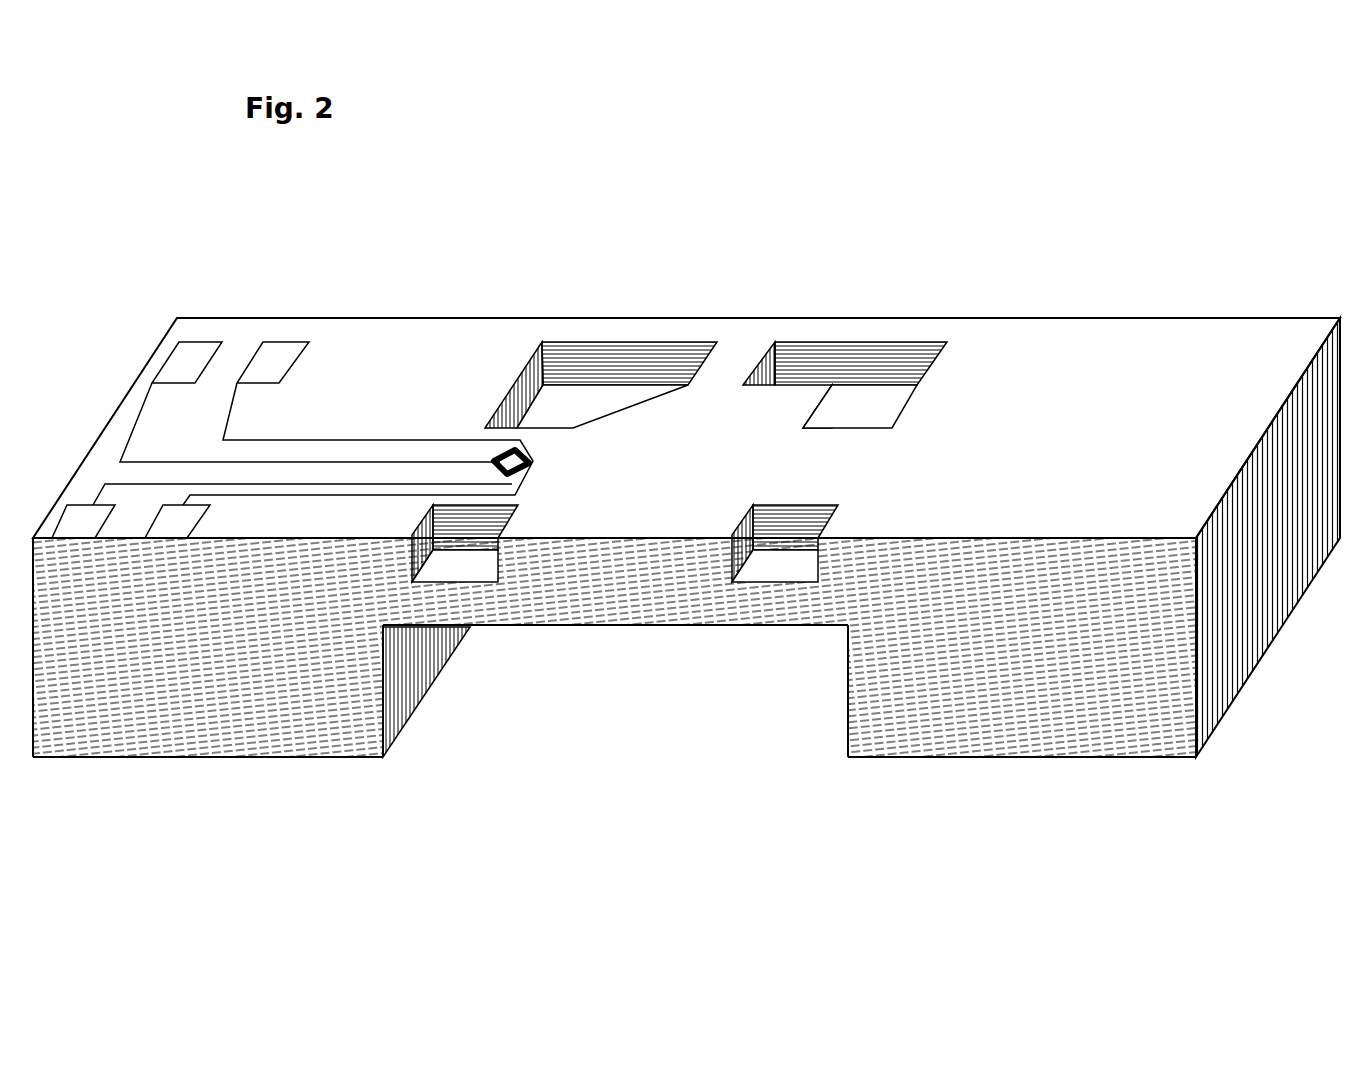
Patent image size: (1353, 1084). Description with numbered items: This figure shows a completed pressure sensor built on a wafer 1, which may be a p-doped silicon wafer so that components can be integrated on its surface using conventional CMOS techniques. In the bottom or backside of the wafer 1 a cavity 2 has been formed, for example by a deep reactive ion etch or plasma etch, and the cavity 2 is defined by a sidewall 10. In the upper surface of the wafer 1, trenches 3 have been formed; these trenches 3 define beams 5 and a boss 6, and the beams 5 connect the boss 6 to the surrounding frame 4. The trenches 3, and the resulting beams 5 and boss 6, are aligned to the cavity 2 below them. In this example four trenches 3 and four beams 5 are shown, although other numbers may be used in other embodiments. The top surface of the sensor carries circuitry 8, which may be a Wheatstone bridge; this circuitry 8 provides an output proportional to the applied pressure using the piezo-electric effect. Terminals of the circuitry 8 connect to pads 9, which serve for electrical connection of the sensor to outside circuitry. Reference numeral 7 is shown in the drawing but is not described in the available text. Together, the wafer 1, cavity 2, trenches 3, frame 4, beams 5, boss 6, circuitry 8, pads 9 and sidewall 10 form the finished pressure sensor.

The wafer 1 is at (686, 537).
The cavity 2 is at (615, 691).
The trenches 3 is at (550, 403).
The frame 4 is at (686, 428).
The beams 5 is at (473, 462).
The boss 6 is at (643, 497).
The front opening 7 is at (455, 606).
The circuitry 8 is at (530, 447).
The pads 9 is at (257, 363).
The sidewall 10 is at (843, 716).